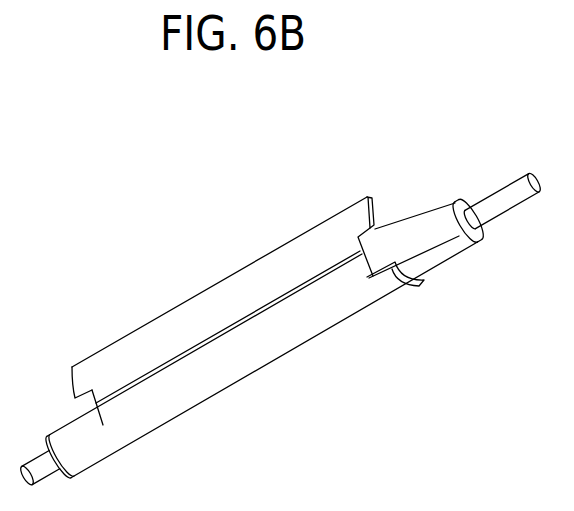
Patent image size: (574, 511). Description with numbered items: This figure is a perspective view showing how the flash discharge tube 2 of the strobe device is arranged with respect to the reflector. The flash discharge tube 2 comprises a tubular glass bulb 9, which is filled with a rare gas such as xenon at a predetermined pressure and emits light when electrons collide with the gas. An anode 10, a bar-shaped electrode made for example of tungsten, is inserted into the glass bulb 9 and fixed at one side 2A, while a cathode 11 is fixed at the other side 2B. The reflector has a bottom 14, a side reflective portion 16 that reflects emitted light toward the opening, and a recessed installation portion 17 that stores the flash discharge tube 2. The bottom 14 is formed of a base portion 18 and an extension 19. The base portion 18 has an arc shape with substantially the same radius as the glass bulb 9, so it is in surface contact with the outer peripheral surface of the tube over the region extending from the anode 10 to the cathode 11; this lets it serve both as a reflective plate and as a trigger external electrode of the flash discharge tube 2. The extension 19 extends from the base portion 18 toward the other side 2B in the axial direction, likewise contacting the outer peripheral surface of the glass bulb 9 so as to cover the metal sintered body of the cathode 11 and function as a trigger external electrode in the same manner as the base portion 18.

The flash discharge tube 2 is at (462, 98).
The one side 2A is at (68, 446).
The other side 2B is at (441, 221).
The tubular glass bulb 9 is at (95, 440).
The anode 10 is at (36, 476).
The cathode 11 is at (517, 197).
The bottom 14 is at (263, 437).
The side reflective portion 16 is at (277, 270).
The recessed installation portion 17 is at (365, 260).
The base portion 18 is at (263, 350).
The extension 19 is at (395, 290).